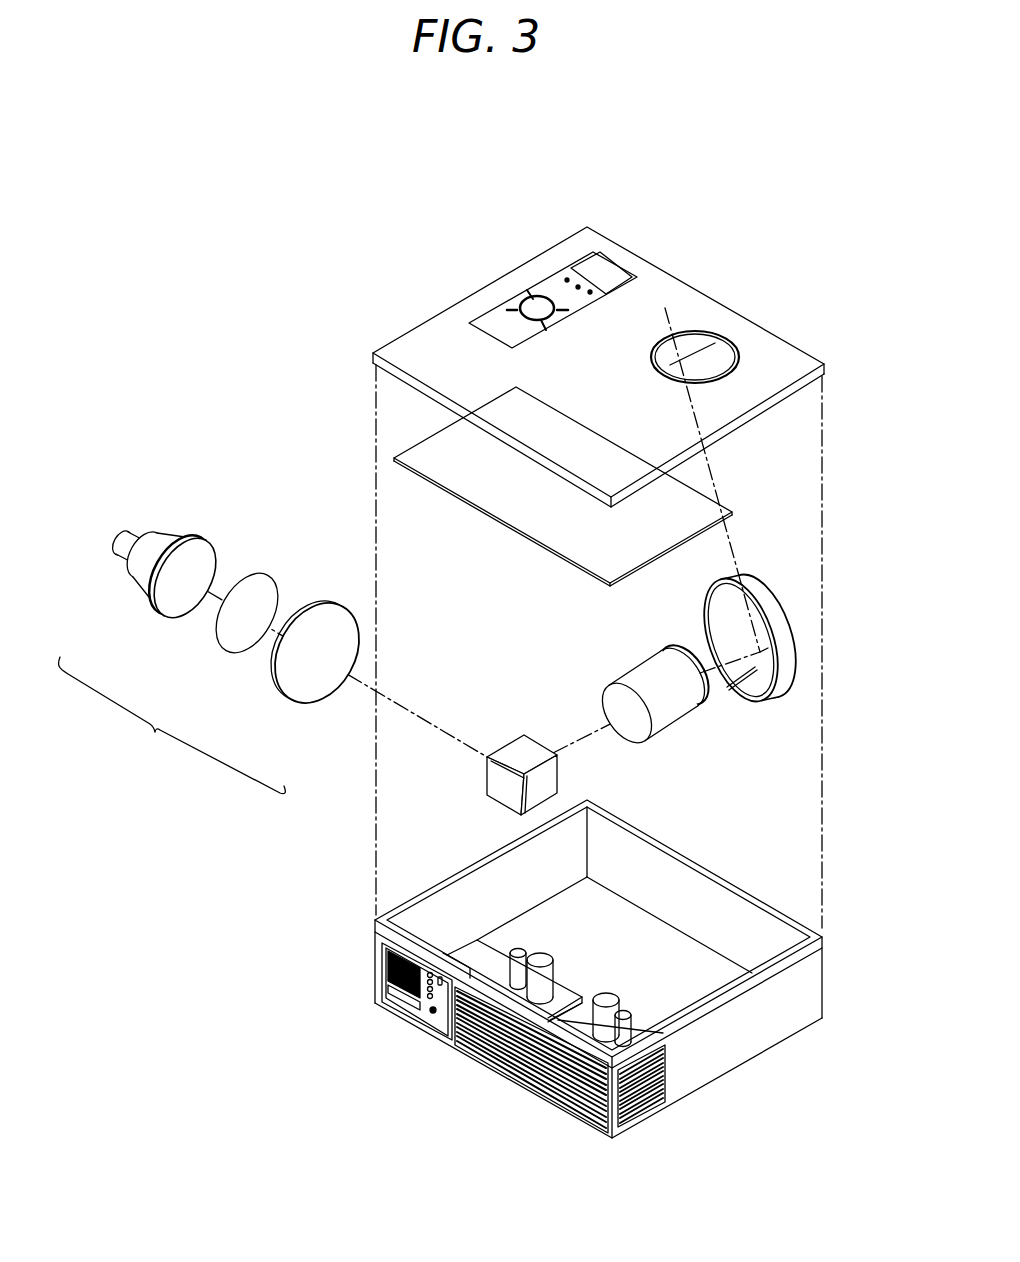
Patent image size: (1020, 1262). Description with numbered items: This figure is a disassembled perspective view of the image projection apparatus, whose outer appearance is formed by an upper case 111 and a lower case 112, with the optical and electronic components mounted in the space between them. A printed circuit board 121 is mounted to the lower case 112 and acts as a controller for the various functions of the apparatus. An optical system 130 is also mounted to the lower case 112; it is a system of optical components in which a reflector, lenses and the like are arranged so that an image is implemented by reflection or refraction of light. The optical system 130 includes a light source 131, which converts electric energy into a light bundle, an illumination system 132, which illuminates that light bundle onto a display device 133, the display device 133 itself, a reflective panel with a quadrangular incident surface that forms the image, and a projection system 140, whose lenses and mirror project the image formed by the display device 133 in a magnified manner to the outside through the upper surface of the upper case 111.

The upper case 111 is at (775, 348).
The lower case 112 is at (740, 1052).
The printed circuit board 121 is at (510, 512).
The optical system 130 is at (340, 670).
The light source 131 is at (143, 588).
The illumination system 132 is at (220, 658).
The display device 133 is at (498, 775).
The projection system 140 is at (597, 690).